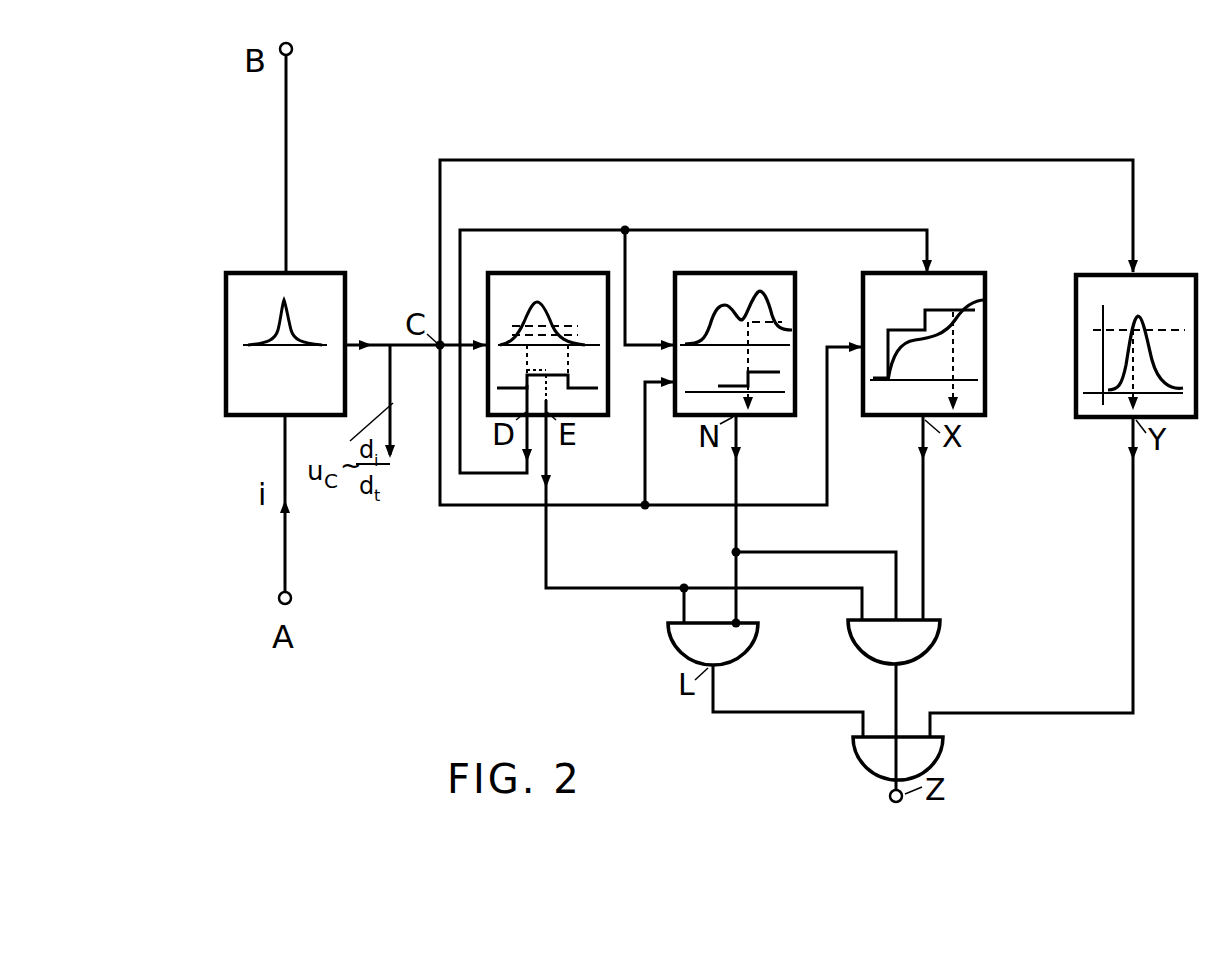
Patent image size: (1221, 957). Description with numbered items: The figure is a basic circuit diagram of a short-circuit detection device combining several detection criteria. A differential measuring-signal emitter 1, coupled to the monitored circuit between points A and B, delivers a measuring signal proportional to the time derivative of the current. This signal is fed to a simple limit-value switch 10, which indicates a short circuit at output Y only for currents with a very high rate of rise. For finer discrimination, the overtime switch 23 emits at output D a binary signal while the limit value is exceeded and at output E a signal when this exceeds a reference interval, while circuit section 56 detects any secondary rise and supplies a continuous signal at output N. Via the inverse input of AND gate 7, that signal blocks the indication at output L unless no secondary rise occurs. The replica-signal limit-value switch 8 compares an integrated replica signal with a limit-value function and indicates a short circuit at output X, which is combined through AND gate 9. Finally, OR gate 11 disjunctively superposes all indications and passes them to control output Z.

The differential measuring-signal emitter 1 is at (226, 337).
The overtime switch 23 is at (545, 265).
The secondary-rise detecting circuit section 56 is at (735, 265).
The replica-signal limit-value switch 8 is at (963, 274).
The limit-value switch 10 is at (1173, 273).
The AND gate 7 is at (668, 637).
The AND gate 9 is at (940, 636).
The OR gate 11 is at (852, 749).